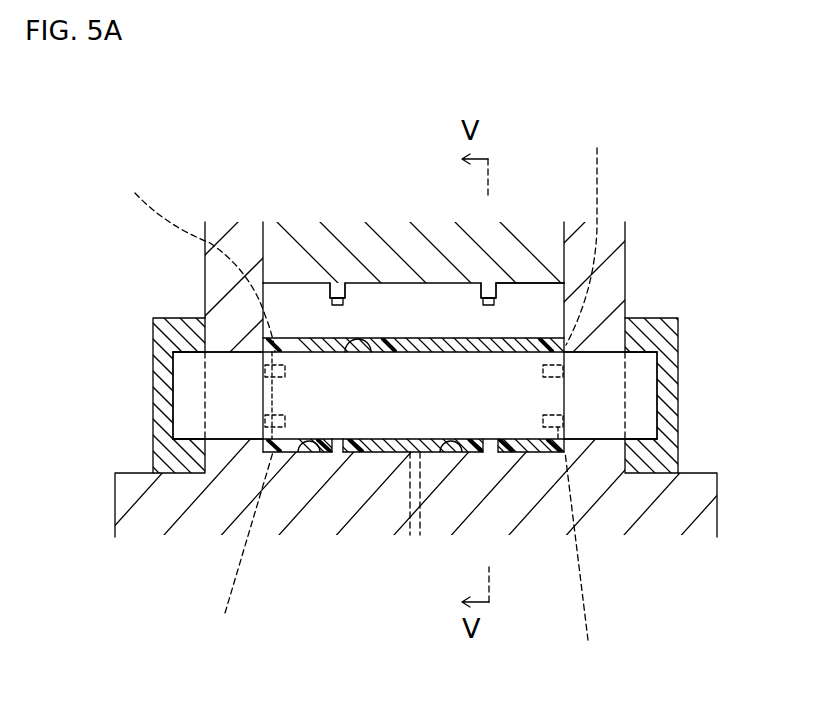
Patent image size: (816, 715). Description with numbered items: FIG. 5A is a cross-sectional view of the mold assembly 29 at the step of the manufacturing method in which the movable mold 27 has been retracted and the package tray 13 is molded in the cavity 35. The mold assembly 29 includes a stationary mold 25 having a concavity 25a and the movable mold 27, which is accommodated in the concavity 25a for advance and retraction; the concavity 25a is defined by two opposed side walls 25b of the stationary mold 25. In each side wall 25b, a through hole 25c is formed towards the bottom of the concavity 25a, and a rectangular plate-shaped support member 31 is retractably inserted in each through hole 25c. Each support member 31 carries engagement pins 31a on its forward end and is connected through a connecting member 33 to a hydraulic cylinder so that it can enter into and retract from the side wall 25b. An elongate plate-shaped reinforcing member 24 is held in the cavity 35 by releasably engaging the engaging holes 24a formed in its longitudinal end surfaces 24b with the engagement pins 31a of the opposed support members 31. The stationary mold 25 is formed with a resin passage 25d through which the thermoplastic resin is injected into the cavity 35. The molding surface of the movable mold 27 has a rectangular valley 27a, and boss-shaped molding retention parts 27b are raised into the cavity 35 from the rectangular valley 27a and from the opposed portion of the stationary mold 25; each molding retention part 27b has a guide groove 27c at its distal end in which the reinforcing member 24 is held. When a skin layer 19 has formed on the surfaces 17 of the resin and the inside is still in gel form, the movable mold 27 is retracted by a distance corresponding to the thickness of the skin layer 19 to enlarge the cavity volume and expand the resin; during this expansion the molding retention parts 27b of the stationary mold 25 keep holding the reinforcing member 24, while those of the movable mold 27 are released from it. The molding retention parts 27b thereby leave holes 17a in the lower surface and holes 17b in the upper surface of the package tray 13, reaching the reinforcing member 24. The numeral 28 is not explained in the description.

The package tray 13 is at (411, 339).
The surfaces 17 is at (436, 400).
The holes 17a is at (343, 439).
The holes 17b is at (333, 343).
The skin layer 19 is at (450, 338).
The reinforcing member 24 is at (386, 453).
The engaging holes 24a is at (214, 403).
The longitudinal end surfaces 24b is at (262, 403).
The stationary mold 25 is at (693, 523).
The concavity 25a is at (265, 255).
The side walls 25b is at (205, 270).
The through holes 25c is at (233, 352).
The resin passage 25d is at (418, 535).
The movable mold 27 is at (543, 283).
The rectangular valley 27a is at (548, 283).
The molding retention parts 27b is at (338, 283).
The guide groove 27c is at (343, 302).
The bead 28 is at (362, 352).
The mold assembly 29 is at (707, 207).
The support member 31 is at (232, 427).
The engagement pins 31a is at (631, 395).
The connecting member 33 is at (153, 334).
The cavity 35 is at (312, 453).